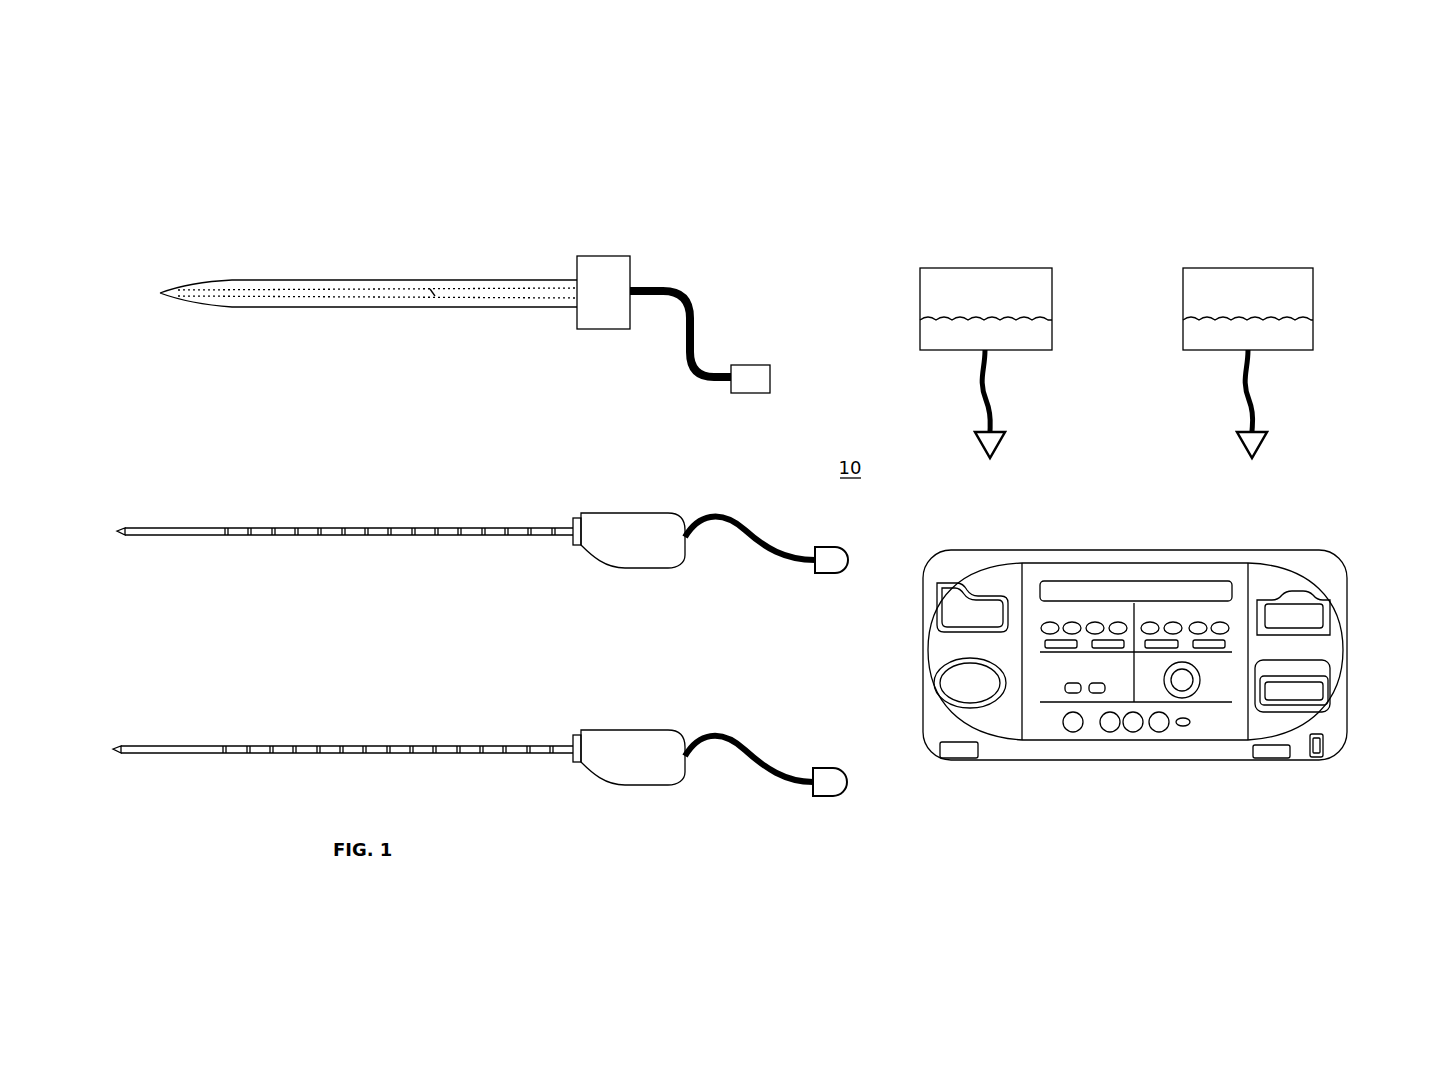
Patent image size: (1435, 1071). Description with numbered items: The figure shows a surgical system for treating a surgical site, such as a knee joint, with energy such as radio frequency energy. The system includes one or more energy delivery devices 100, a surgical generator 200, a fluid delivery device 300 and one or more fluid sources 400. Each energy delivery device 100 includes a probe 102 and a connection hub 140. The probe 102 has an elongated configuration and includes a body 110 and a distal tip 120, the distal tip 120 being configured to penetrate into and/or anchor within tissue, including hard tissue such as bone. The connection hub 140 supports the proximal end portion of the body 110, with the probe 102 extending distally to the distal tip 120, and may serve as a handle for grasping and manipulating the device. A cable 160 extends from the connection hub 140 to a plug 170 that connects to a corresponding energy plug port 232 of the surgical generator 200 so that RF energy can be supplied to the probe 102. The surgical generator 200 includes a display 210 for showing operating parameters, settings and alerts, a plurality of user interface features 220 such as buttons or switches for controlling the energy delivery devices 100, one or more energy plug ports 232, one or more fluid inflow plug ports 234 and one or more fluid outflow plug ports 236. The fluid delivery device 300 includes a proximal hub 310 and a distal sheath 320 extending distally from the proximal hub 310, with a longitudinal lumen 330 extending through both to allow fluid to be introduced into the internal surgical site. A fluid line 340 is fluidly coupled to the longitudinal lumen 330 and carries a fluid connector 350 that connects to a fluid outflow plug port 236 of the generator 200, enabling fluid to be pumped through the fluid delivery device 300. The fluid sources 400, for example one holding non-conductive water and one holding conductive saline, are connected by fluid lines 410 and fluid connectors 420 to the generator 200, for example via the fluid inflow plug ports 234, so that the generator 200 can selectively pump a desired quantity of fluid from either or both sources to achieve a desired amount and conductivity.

The energy delivery device 100 is at (368, 497).
The probe 102 is at (200, 535).
The body 110 is at (395, 535).
The distal tip 120 is at (118, 532).
The connection hub 140 is at (597, 551).
The cable 160 is at (752, 553).
The plug 170 is at (825, 573).
The surgical generator 200 is at (1088, 795).
The display 210 is at (1180, 587).
The user interface features 220 is at (1150, 630).
The energy plug port 232 is at (955, 605).
The fluid inflow plug port 234 is at (965, 760).
The fluid outflow plug port 236 is at (1300, 688).
The fluid delivery device 300 is at (405, 262).
The proximal hub 310 is at (598, 327).
The distal sheath 320 is at (337, 315).
The longitudinal lumen 330 is at (425, 293).
The fluid line 340 is at (690, 377).
The fluid connector 350 is at (773, 378).
The fluid source 400 is at (930, 334).
The fluid line 410 is at (990, 396).
The fluid connector 420 is at (995, 452).